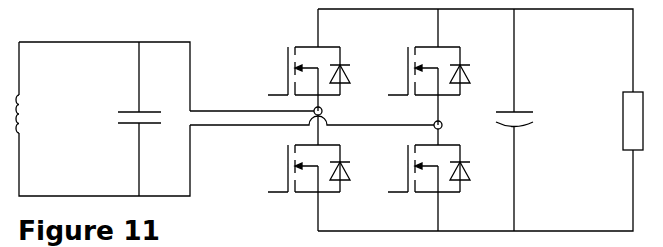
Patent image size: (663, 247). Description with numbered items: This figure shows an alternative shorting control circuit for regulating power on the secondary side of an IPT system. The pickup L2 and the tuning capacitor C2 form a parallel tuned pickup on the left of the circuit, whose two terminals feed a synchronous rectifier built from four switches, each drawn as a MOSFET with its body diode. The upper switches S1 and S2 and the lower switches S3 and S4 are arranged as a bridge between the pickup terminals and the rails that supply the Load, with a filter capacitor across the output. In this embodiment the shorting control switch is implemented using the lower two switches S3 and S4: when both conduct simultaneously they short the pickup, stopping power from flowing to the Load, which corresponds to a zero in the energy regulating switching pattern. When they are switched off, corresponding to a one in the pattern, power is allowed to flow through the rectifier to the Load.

The pickup L2 is at (36, 115).
The tuning capacitor C2 is at (123, 119).
The switch of synchronous rectifier S1 is at (300, 60).
The switch of synchronous rectifier S2 is at (420, 67).
The lower switch of synchronous rectifier S3 is at (309, 188).
The lower switch of synchronous rectifier S4 is at (429, 188).
The load Load is at (598, 121).